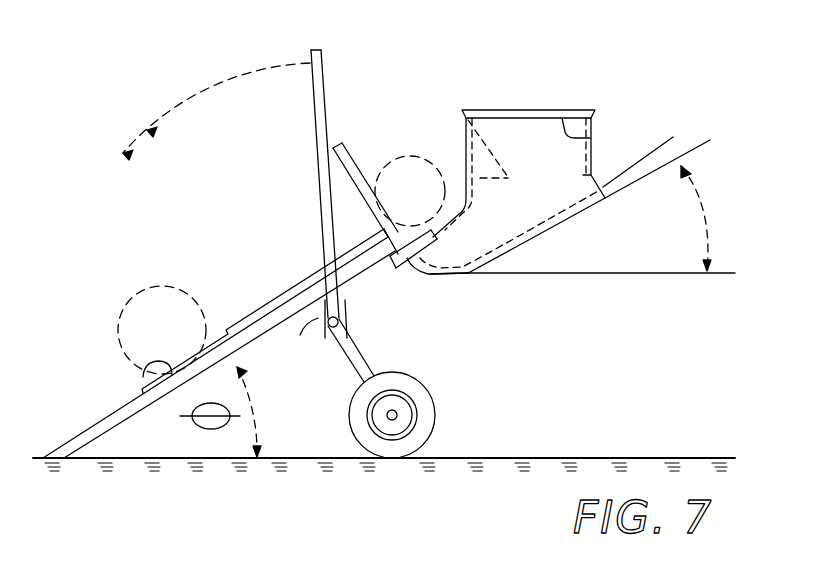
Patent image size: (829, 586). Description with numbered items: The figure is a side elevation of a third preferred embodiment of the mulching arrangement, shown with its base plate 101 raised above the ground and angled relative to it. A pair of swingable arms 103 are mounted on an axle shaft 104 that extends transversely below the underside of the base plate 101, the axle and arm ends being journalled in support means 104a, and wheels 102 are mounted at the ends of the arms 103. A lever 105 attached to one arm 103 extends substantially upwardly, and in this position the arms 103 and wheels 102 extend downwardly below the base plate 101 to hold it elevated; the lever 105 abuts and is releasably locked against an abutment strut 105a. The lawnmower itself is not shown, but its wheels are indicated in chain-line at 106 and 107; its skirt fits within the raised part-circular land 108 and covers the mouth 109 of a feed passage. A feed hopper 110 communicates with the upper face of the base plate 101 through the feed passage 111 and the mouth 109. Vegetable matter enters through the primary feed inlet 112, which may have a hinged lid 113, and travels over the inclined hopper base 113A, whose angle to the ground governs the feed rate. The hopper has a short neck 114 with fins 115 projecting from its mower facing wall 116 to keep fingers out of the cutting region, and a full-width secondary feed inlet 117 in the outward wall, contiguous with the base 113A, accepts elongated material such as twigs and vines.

The base plate 101 is at (143, 369).
The wheels 102 is at (436, 403).
The swingable arms 103 is at (363, 361).
The axle shaft 104 is at (323, 332).
The support means 104a is at (272, 366).
The lever 105 is at (323, 78).
The abutment strut 105a is at (342, 143).
The mower wheel 106 is at (168, 287).
The mower wheel 107 is at (402, 153).
The raised part-circular land 108 is at (263, 306).
The mouth of feed passage 109 is at (388, 266).
The feed hopper 110 is at (577, 96).
The feed passage 111 is at (460, 250).
The primary feed inlet 112 is at (592, 138).
The hinged cover or lid 113 is at (483, 110).
The hopper base 113A is at (570, 222).
The neck 114 is at (537, 132).
The baffles, plates or fins 115 is at (483, 150).
The mower facing wall 116 is at (465, 156).
The secondary feed inlet 117 is at (690, 120).